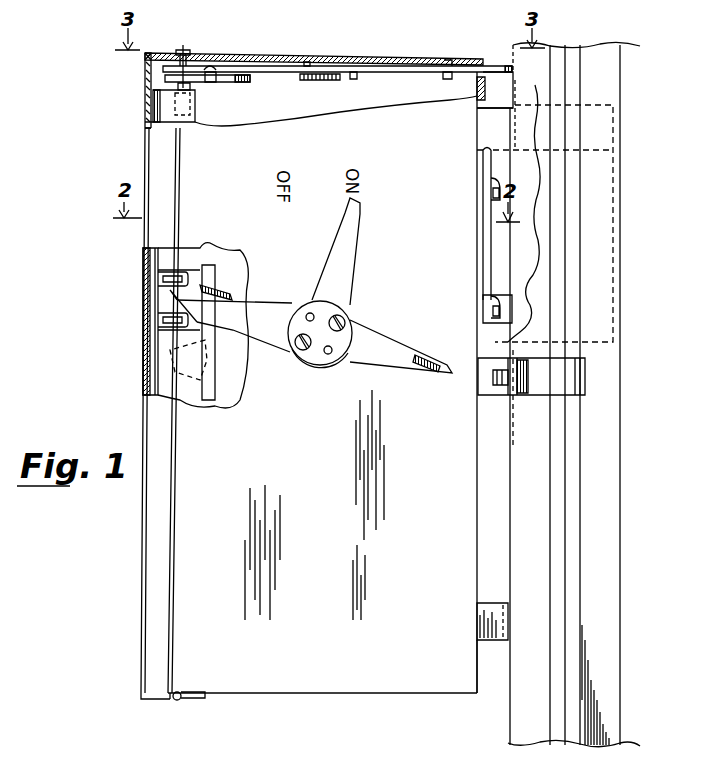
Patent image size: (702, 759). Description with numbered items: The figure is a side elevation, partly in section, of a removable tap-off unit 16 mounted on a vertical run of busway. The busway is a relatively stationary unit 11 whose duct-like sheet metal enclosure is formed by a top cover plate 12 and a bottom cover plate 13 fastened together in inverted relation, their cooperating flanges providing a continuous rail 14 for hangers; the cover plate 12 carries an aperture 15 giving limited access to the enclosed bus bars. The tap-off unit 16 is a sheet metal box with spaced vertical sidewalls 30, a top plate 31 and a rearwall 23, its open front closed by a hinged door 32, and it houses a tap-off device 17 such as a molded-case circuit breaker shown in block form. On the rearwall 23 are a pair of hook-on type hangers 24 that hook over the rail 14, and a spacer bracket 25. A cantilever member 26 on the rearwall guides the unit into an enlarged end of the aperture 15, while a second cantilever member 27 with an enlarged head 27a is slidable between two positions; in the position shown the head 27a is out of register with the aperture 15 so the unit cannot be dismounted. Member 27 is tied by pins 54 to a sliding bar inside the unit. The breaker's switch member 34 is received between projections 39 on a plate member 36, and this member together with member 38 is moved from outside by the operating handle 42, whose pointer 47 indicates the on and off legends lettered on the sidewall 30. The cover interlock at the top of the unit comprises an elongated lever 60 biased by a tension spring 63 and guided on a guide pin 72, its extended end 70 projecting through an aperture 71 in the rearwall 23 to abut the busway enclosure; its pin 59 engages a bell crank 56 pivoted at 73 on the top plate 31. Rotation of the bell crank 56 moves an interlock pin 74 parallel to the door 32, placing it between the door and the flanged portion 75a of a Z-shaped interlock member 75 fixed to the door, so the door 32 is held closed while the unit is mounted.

The relatively stationary unit 11 is at (620, 536).
The top cover plate 12 is at (508, 722).
The bottom cover plate 13 is at (622, 700).
The rail 14 is at (580, 612).
The aperture 15 is at (514, 108).
The tap-off unit 16 is at (330, 693).
The tap-off device 17 is at (222, 370).
The rearwall 23 is at (477, 500).
The hook-on type hangers 24 is at (585, 380).
The spacer bracket 25 is at (497, 642).
The cantilever member 26 is at (495, 127).
The cantilever member 27 is at (483, 150).
The enlarged head 27a is at (613, 342).
The sidewalls 30 is at (445, 693).
The top plate 31 is at (416, 60).
The door 32 is at (141, 556).
The switch member 34 is at (199, 358).
The plate member 36 is at (158, 360).
The member 38 is at (158, 297).
The projections 39 is at (176, 274).
The operating handle 42 is at (372, 333).
The position indicating pointer 47 is at (355, 245).
The pins 54 is at (491, 184).
The bell crank 56 is at (250, 80).
The pin 59 is at (186, 57).
The lever 60 is at (387, 72).
The tension spring 63 is at (310, 80).
The extended end 70 is at (503, 68).
The aperture 71 is at (488, 78).
The guide pin 72 is at (447, 60).
The pivot 73 is at (214, 82).
The interlock pin 74 is at (190, 88).
The interlock member 75 is at (160, 88).
The flanged portion 75a is at (205, 122).